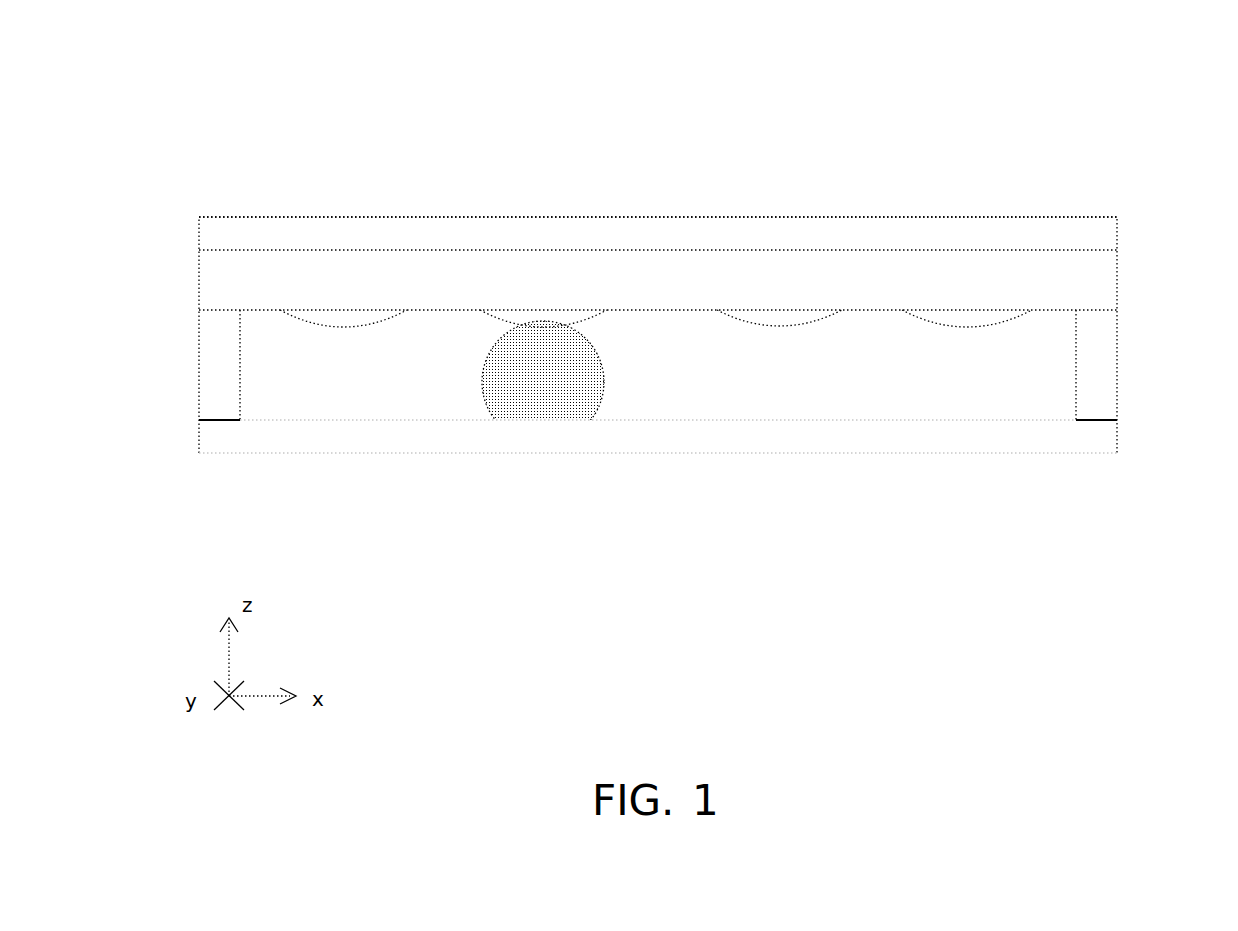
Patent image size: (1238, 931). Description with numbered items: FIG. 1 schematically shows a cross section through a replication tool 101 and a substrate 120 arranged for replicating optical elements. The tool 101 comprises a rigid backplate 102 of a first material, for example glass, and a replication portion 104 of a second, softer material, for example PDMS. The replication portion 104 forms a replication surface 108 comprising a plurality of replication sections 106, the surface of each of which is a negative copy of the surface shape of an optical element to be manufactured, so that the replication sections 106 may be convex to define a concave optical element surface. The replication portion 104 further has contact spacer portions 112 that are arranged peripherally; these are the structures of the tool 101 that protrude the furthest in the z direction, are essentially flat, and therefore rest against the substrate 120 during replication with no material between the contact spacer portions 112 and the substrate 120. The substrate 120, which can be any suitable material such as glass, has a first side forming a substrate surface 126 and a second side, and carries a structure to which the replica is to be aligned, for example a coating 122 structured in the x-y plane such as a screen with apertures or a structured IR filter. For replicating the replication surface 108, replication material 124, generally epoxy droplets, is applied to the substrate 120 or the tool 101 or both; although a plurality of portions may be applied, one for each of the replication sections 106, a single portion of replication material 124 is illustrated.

The tool 101 is at (180, 257).
The rigid backplate 102 is at (825, 230).
The replication portion 104 is at (1040, 287).
The replication sections 106 is at (515, 307).
The replication surface 108 is at (420, 330).
The contact spacer portions 112 is at (218, 365).
The substrate 120 is at (1050, 440).
The coating 122 is at (862, 420).
The replication material 124 is at (558, 340).
The substrate surface 126 is at (426, 424).